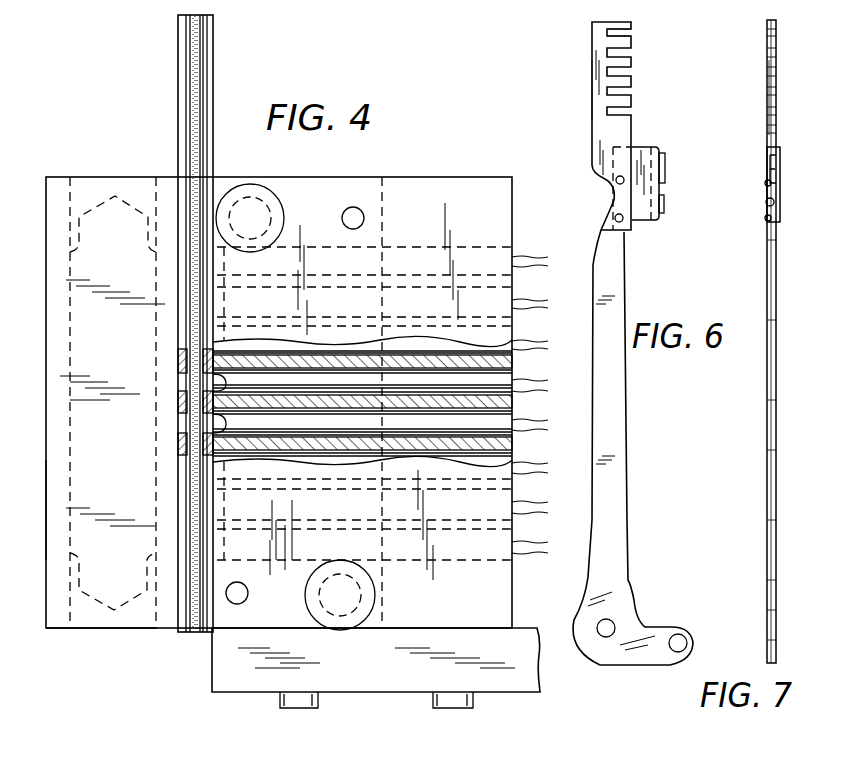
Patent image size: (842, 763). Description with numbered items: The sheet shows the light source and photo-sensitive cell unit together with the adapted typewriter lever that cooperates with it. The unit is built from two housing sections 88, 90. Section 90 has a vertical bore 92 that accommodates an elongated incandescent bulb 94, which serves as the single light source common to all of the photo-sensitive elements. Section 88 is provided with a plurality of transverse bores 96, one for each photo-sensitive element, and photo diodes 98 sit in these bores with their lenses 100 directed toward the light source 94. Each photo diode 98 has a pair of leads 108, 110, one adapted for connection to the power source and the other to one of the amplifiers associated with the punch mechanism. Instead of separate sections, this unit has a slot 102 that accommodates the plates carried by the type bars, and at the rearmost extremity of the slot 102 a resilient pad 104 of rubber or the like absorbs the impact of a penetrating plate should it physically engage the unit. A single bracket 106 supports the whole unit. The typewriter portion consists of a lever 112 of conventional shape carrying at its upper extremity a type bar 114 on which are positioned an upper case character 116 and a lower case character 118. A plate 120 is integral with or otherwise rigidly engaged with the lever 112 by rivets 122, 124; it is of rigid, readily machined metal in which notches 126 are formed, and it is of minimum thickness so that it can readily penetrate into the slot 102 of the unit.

In FIG. 4, the housing section 88 is at (473, 190).
In FIG. 4, the housing section 90 is at (68, 181).
In FIG. 4, the vertical bore 92 is at (70, 630).
In FIG. 4, the incandescent bulb 94 is at (85, 486).
In FIG. 4, the transverse bores 96 is at (207, 373).
In FIG. 4, the photo diodes 98 is at (338, 434).
In FIG. 4, the lenses 100 is at (216, 418).
In FIG. 4, the slot 102 is at (199, 72).
In FIG. 4, the resilient pad 104 is at (198, 108).
In FIG. 4, the bracket 106 is at (512, 684).
In FIG. 4, the lead 108 is at (518, 300).
In FIG. 4, the lead 110 is at (530, 308).
In FIG. 6, the lever 112 is at (625, 420).
In FIG. 7, the lever 112 is at (768, 470).
In FIG. 6, the type bar 114 is at (644, 152).
In FIG. 7, the type bar 114 is at (773, 184).
In FIG. 6, the upper case character 116 is at (665, 165).
In FIG. 7, the upper case character 116 is at (767, 164).
In FIG. 6, the lower case character 118 is at (664, 214).
In FIG. 7, the lower case character 118 is at (766, 204).
In FIG. 6, the plate 120 is at (596, 103).
In FIG. 7, the plate 120 is at (766, 130).
In FIG. 6, the rivet 122 is at (616, 181).
In FIG. 7, the rivet 122 is at (765, 184).
In FIG. 6, the rivet 124 is at (614, 218).
In FIG. 7, the rivet 124 is at (757, 220).
In FIG. 6, the notches 126 is at (628, 31).
In FIG. 7, the notches 126 is at (766, 27).